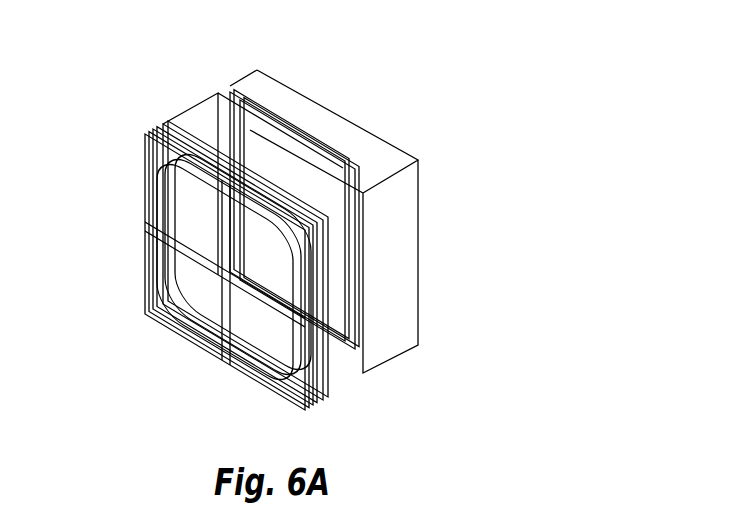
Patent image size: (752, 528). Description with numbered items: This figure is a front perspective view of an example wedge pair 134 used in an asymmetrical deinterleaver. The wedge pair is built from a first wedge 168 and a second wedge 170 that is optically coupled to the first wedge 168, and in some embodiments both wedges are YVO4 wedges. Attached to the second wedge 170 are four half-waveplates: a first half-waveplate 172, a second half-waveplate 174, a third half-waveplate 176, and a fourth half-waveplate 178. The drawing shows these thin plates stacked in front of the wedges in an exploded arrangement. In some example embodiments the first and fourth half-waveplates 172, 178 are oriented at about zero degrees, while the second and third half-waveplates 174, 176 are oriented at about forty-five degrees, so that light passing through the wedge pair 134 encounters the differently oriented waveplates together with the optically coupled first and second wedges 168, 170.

The window assembly 134 is at (367, 60).
The first wedge 168 is at (407, 310).
The second wedge 170 is at (197, 122).
The first half-waveplate 172 is at (153, 143).
The second half-waveplate 174 is at (242, 257).
The third half-waveplate 176 is at (222, 273).
The fourth half-waveplate 178 is at (323, 387).